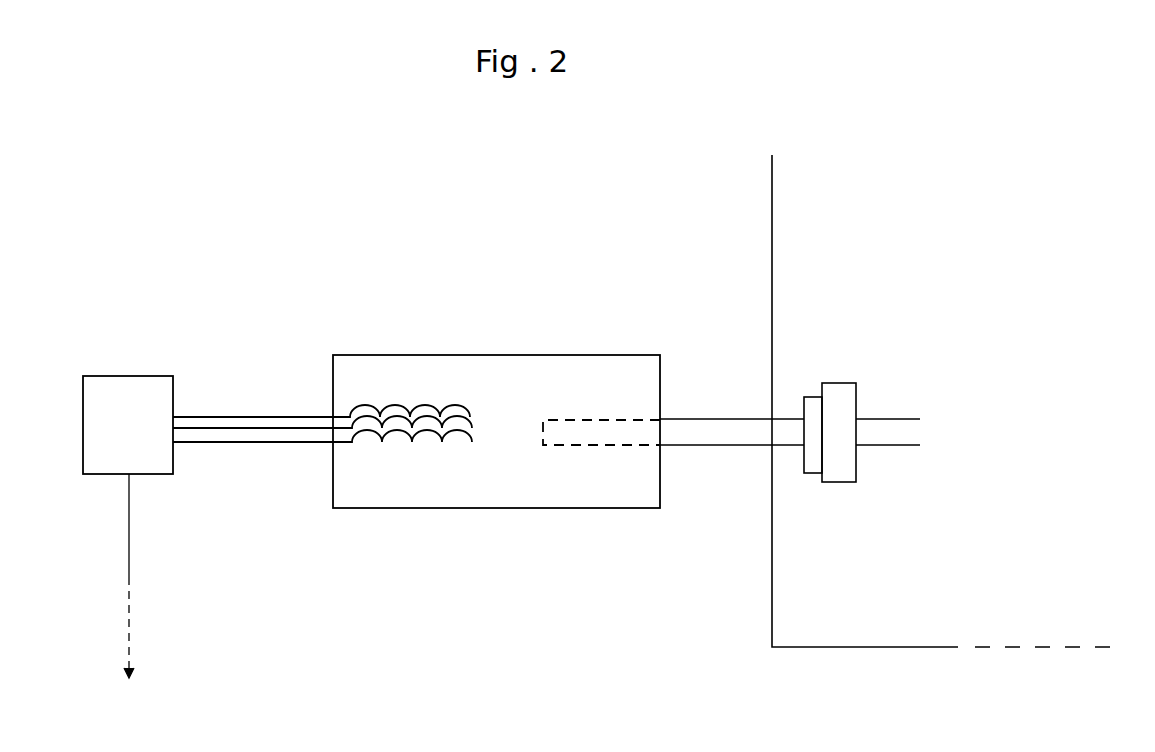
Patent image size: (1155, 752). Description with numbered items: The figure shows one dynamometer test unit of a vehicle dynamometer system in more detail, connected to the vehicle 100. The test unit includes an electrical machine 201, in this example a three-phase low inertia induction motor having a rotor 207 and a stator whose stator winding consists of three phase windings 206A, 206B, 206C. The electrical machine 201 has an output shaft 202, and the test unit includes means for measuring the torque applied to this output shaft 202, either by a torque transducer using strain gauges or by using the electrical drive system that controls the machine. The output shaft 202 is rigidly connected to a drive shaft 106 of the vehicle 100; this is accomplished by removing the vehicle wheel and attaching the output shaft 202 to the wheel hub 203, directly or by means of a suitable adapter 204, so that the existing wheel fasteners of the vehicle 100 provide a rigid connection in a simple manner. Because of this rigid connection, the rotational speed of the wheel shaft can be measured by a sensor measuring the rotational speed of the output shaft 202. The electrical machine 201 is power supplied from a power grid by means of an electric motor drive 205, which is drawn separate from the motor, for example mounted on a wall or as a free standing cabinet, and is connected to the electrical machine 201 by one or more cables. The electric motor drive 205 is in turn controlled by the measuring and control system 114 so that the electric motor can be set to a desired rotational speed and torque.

The vehicle 100 is at (835, 630).
The drive shaft 106 is at (900, 422).
The measuring and control system 114 is at (146, 591).
The electrical machine 201 is at (633, 483).
The output shaft 202 is at (755, 417).
The wheel hub 203 is at (835, 465).
The adapter 204 is at (812, 395).
The electric motor drive 205 is at (137, 380).
The phase winding 206A is at (425, 402).
The phase winding 206B is at (462, 410).
The phase winding 206C is at (473, 433).
The rotor 207 is at (578, 428).